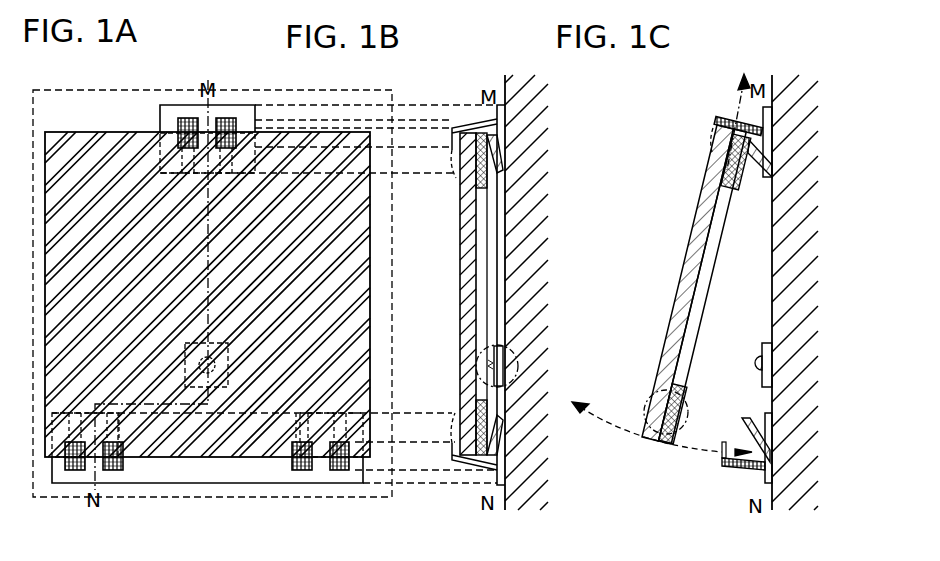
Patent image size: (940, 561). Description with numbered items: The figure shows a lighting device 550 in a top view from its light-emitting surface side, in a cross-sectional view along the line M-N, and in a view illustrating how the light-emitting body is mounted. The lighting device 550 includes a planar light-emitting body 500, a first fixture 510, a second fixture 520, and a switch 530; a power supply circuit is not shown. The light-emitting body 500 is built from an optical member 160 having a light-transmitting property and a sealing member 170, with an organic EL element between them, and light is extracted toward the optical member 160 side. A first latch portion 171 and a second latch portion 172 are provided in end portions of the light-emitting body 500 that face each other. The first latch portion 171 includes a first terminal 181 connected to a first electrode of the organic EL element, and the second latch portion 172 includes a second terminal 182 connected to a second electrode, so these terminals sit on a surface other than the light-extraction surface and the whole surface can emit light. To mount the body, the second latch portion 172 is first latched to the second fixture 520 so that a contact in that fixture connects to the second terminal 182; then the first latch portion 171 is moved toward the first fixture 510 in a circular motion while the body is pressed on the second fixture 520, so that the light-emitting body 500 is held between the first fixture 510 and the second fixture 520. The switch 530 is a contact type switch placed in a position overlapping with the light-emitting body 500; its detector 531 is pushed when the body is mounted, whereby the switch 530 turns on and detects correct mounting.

In FIG. 1A, the light-emitting body 500 is at (93, 168).
In FIG. 1A, the first fixture 510 is at (141, 475).
In FIG. 1C, the first fixture 510 is at (765, 481).
In FIG. 1A, the second fixture 520 is at (167, 114).
In FIG. 1C, the second fixture 520 is at (774, 95).
In FIG. 1B, the switch 530 is at (513, 348).
In FIG. 1C, the switch 530 is at (581, 332).
In FIG. 1C, the detector 531 is at (748, 358).
In FIG. 1A, the lighting device 550 is at (52, 89).
In FIG. 1B, the optical member 160 is at (457, 292).
In FIG. 1B, the sealing member 170 is at (503, 284).
In FIG. 1B, the first latch portion 171 is at (478, 366).
In FIG. 1C, the first latch portion 171 is at (648, 436).
In FIG. 1B, the second latch portion 172 is at (455, 180).
In FIG. 1C, the second latch portion 172 is at (716, 135).
In FIG. 1B, the first terminal 181 is at (506, 410).
In FIG. 1B, the second terminal 182 is at (506, 185).